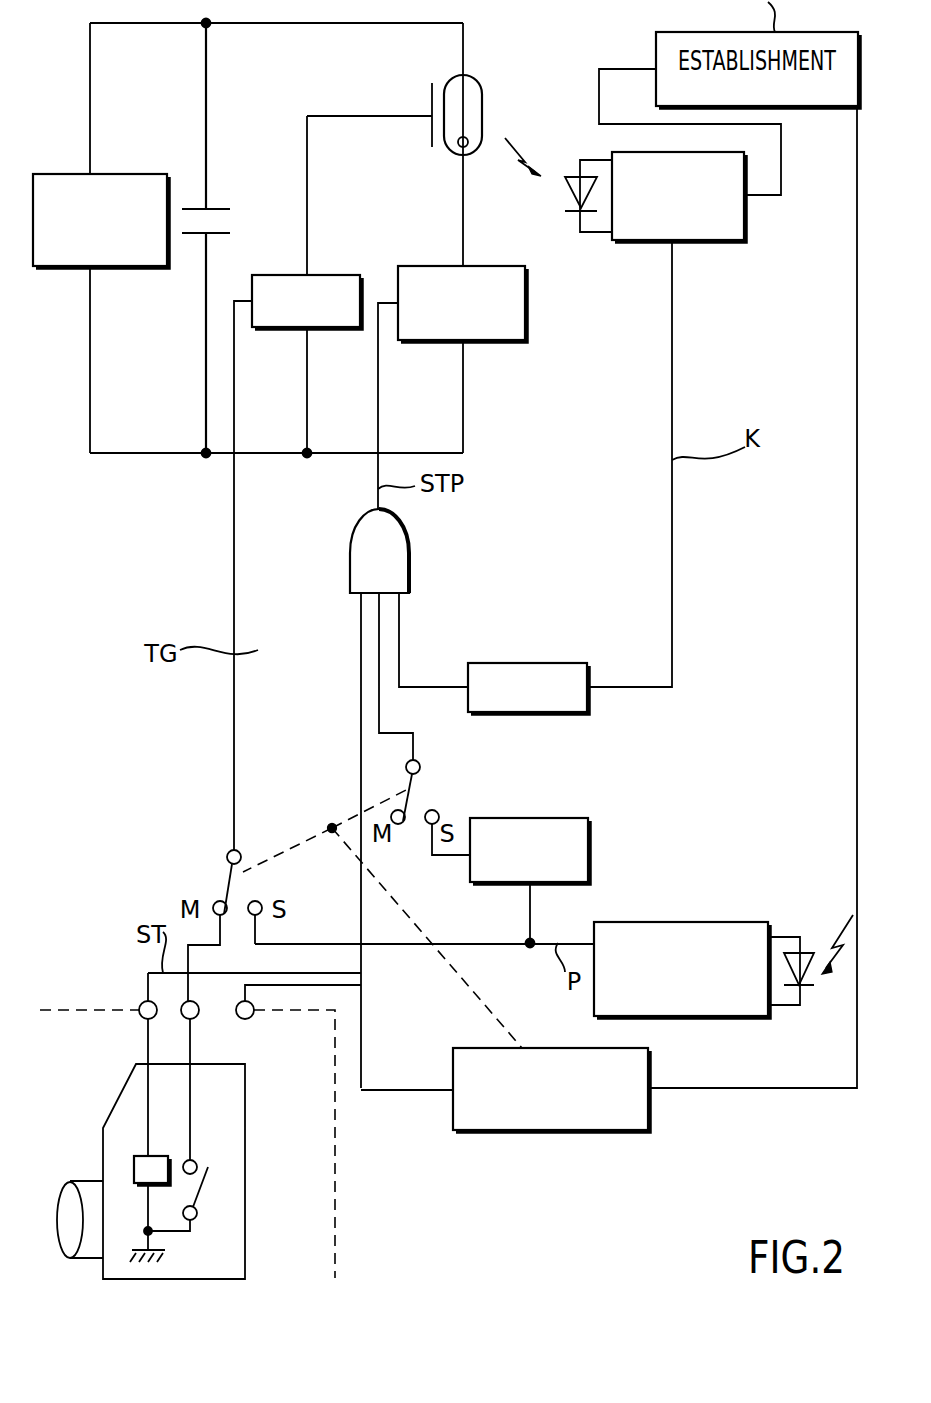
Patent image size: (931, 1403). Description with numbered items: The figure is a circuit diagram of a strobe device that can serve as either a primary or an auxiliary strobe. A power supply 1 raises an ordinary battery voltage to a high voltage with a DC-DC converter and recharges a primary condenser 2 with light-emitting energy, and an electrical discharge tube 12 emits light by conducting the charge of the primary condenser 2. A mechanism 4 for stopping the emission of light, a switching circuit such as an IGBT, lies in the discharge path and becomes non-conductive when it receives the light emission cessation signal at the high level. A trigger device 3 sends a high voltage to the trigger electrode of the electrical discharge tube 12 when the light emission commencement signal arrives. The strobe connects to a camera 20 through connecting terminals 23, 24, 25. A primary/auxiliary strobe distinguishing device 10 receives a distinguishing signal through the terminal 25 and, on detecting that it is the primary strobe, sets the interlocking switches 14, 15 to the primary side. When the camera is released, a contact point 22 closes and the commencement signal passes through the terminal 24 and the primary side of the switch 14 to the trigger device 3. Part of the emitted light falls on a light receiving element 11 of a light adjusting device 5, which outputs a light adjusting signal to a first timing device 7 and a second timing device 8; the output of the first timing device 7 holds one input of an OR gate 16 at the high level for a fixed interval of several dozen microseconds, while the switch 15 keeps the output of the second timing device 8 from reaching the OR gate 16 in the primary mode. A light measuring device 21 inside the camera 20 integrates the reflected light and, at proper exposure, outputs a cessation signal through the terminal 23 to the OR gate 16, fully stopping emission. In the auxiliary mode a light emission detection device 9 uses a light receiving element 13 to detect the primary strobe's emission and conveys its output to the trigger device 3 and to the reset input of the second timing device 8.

The power supply 1 is at (123, 173).
The primary condenser 2 is at (230, 227).
The trigger device 3 is at (345, 275).
The mechanism for stopping the emission of light 4 is at (525, 303).
The light adjusting device 5 is at (720, 240).
The first timing device 7 is at (548, 663).
The second timing device 8 is at (558, 818).
The light emission detection device 9 is at (733, 1016).
The primary/auxiliary strobe distinguishing device 10 is at (490, 1130).
The light receiving element 11 is at (558, 195).
The electrical discharge tube 12 is at (482, 108).
The light receiving element 13 is at (812, 968).
The interlocking switch 14 is at (190, 878).
The interlocking switch 15 is at (438, 788).
The OR gate 16 is at (410, 578).
The camera 20 is at (245, 1260).
The light measuring device 21 is at (142, 1156).
The contact point 22 is at (203, 1180).
The camera/strobe connecting terminal 23 is at (140, 1018).
The camera/strobe connecting terminal 24 is at (197, 1017).
The camera/strobe connecting terminal 25 is at (253, 1017).